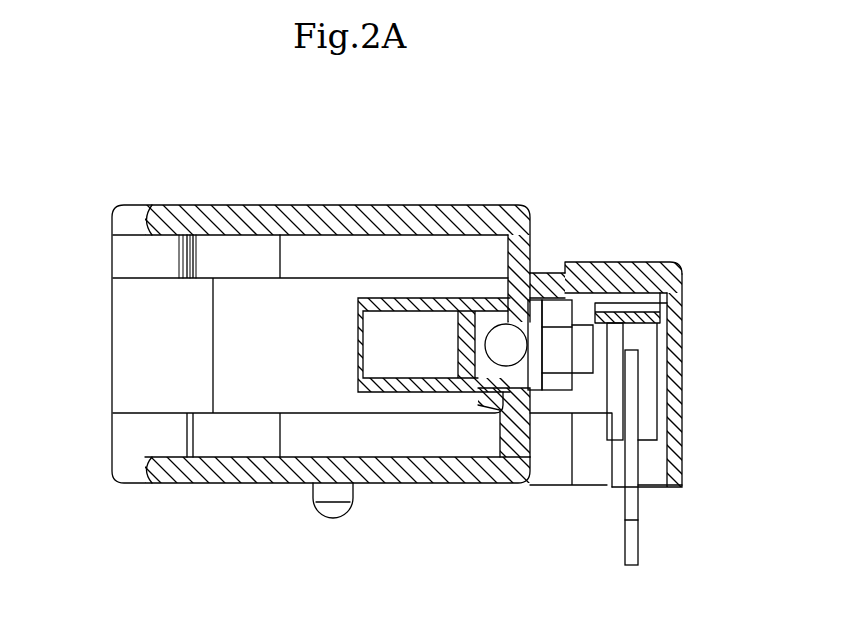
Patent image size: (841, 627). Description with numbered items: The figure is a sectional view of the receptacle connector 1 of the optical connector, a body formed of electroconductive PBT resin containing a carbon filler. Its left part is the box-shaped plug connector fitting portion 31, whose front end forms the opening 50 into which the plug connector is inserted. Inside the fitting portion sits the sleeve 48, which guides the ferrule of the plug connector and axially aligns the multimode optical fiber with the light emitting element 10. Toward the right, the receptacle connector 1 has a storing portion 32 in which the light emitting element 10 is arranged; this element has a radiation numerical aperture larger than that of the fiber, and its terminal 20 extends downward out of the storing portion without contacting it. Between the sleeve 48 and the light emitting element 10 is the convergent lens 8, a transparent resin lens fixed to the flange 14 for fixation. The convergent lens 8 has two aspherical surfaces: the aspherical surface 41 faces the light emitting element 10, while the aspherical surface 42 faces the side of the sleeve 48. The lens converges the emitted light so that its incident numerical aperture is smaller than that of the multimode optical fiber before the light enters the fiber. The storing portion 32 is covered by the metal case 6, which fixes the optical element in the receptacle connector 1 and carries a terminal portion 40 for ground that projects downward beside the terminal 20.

The receptacle connector 1 is at (258, 205).
The plug connector fitting portion 31 is at (343, 207).
The sleeve 48 is at (410, 298).
The flange for fixation 14 is at (526, 325).
The convergent lens 8 is at (543, 330).
The light emitting element 10 is at (562, 330).
The storing portion 32 is at (636, 266).
The metal case 6 is at (668, 262).
The opening 50 is at (130, 390).
The aspherical surface 42 is at (480, 378).
The aspherical surface 41 is at (550, 415).
The terminal 20 is at (622, 504).
The terminal portion for ground 40 is at (630, 540).